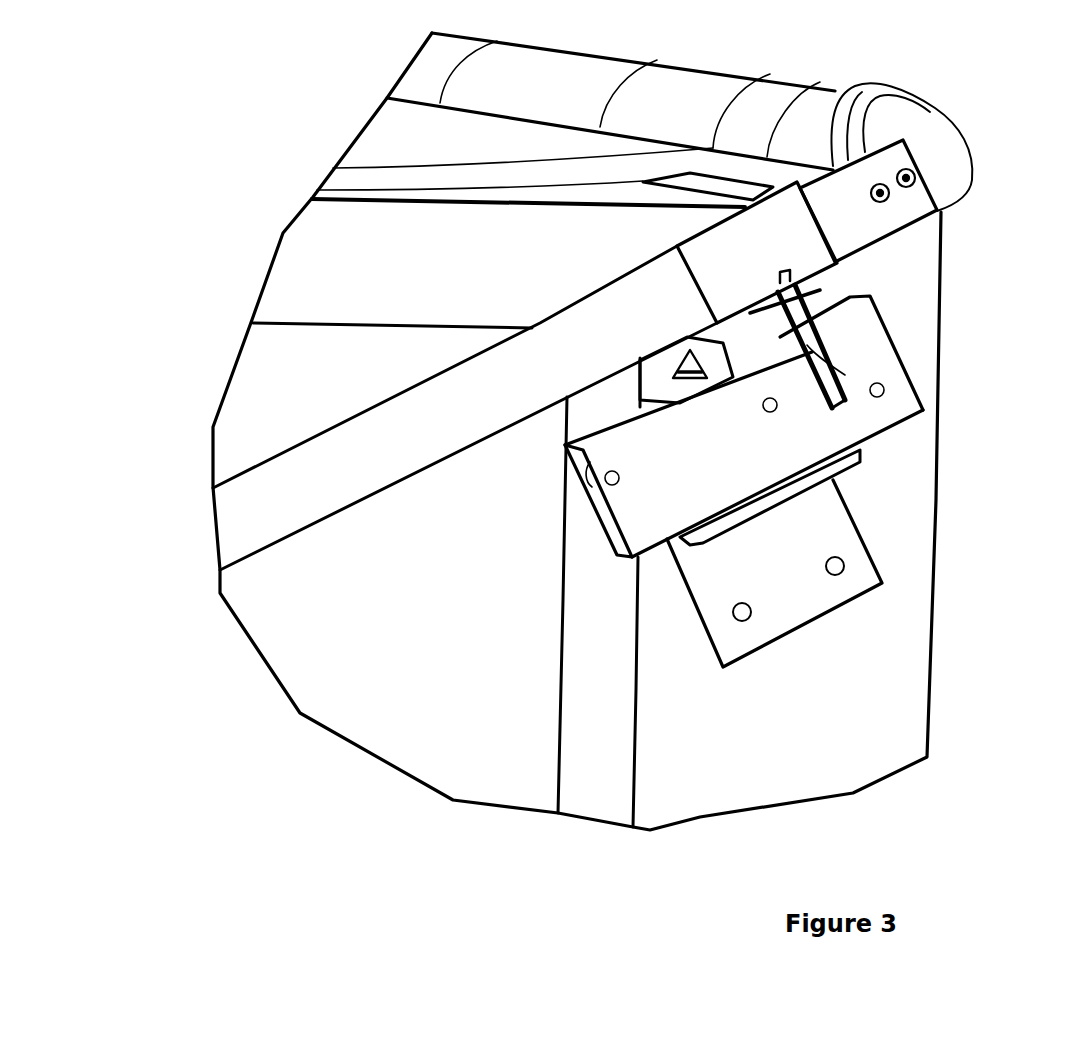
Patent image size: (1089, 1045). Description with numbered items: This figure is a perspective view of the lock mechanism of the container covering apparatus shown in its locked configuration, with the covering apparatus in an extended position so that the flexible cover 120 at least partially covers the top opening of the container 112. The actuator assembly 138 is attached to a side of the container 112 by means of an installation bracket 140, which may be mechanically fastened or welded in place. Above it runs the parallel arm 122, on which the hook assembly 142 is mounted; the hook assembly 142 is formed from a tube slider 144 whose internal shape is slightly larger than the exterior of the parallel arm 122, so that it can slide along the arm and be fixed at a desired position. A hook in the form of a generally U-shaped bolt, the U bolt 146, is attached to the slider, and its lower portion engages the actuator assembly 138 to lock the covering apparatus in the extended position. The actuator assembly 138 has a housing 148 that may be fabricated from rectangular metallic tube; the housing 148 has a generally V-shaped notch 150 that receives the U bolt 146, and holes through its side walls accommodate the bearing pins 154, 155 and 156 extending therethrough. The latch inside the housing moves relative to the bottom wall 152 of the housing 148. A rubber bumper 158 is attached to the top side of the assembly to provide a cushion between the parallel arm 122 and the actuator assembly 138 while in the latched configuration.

The container 112 is at (913, 227).
The flexible cover 120 is at (382, 158).
The parallel arm 122 is at (316, 472).
The actuator assembly 138 is at (907, 443).
The installation bracket 140 is at (830, 596).
The hook assembly 142 is at (855, 257).
The tube slider 144 is at (707, 248).
The U bolt 146 is at (840, 412).
The housing 148 is at (858, 353).
The notch 150 is at (767, 340).
The bottom wall 152 is at (613, 537).
The bearing pin 154 is at (605, 483).
The bearing pin 155 is at (763, 412).
The bearing pin 156 is at (885, 395).
The rubber bumper 158 is at (653, 365).